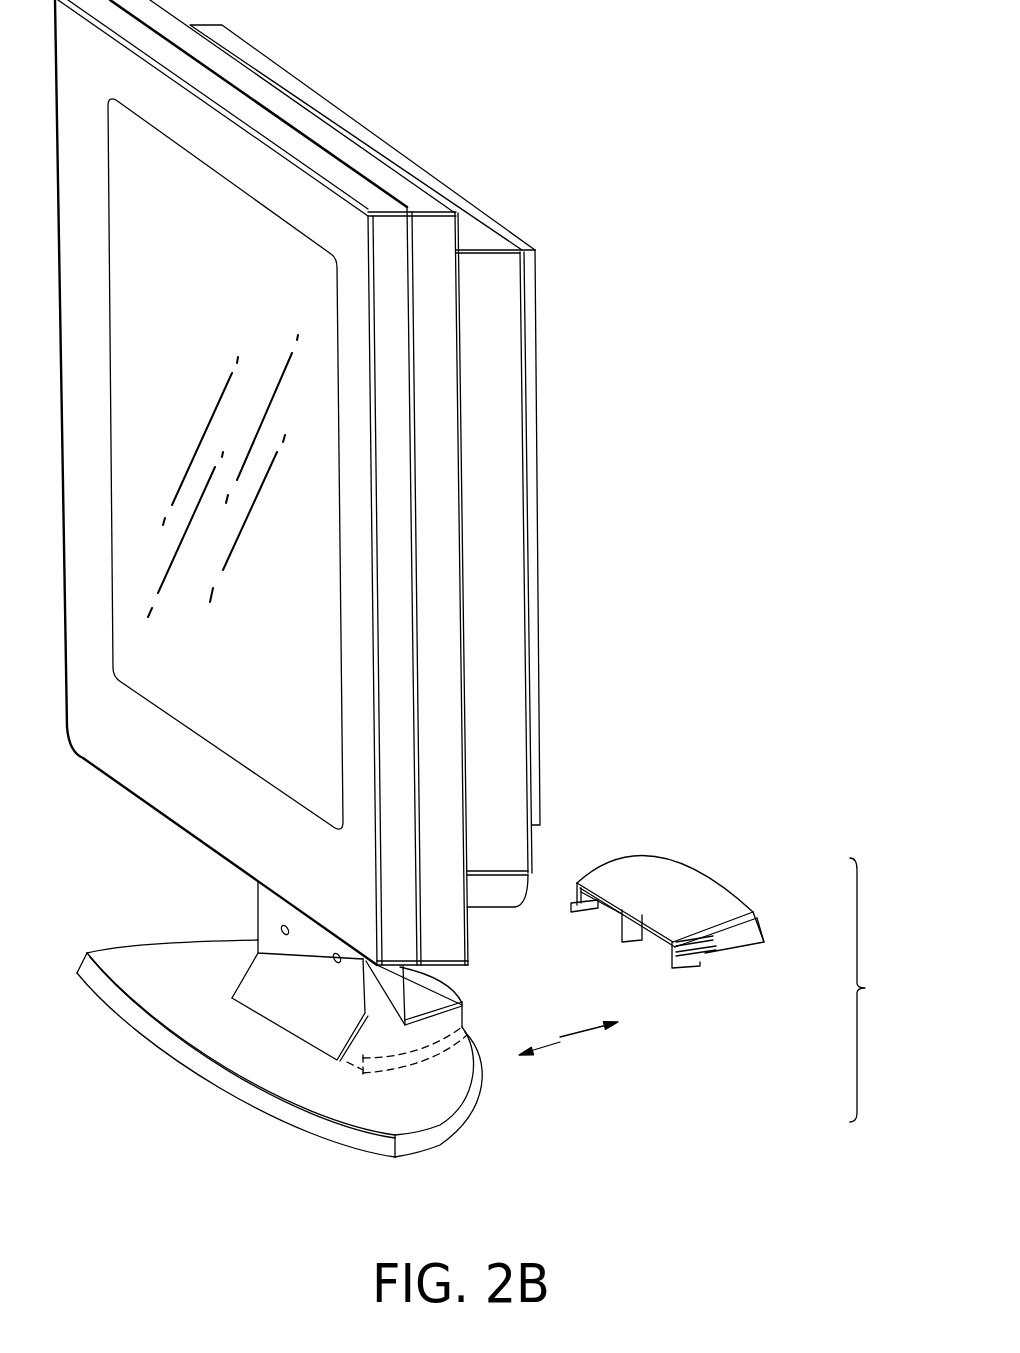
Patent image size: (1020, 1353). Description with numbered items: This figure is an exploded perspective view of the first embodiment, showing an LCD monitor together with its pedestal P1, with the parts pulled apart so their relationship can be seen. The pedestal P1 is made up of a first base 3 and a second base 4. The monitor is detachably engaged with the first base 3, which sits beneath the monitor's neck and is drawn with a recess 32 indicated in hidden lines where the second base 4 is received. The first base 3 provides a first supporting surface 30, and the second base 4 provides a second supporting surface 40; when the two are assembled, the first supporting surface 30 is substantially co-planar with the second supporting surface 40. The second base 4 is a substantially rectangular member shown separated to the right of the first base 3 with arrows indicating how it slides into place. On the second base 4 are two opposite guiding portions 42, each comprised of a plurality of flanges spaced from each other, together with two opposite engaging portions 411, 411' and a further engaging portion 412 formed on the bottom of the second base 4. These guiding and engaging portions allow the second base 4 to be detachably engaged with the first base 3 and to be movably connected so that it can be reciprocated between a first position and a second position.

The first base 3 is at (437, 1051).
The first supporting surface 30 is at (440, 1142).
The recess 32 is at (470, 1072).
The second base 4 is at (661, 943).
The second supporting surface 40 is at (741, 958).
The guiding portions 42 is at (753, 912).
The engaging portion 411 is at (727, 985).
The engaging portion 411' is at (544, 915).
The engaging portion 412 is at (640, 942).
The pedestal P1 is at (915, 1004).